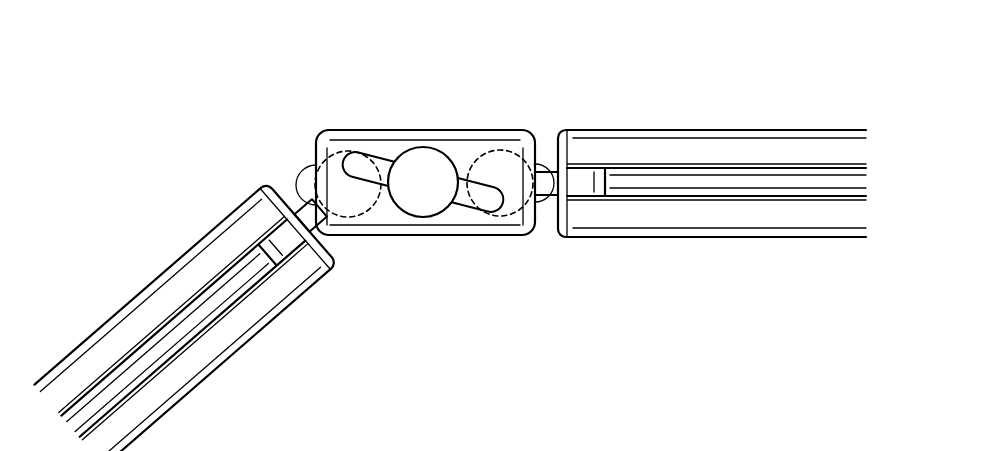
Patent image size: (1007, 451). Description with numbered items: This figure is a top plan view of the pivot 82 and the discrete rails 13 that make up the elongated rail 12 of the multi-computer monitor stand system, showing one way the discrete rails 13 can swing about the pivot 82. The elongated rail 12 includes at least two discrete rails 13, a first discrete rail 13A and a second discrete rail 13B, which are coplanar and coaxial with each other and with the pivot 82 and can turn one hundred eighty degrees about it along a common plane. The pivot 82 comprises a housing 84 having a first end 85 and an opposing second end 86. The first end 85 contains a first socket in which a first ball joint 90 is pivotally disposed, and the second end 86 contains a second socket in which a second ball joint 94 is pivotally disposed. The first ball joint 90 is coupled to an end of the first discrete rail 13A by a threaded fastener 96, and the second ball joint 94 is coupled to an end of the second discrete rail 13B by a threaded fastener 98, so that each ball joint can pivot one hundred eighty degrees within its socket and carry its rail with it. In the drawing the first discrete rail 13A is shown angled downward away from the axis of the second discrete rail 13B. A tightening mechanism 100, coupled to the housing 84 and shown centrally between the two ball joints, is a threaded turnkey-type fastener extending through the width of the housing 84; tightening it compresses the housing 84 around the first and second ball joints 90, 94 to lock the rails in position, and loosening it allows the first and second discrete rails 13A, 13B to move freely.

The elongated rail 12 is at (484, 74).
The pivot 82 is at (428, 112).
The housing 84 is at (448, 130).
The first end 85 is at (316, 153).
The second end 86 is at (538, 148).
The first ball joint 90 is at (336, 148).
The second ball joint 94 is at (503, 150).
The threaded fastener 96 is at (306, 197).
The threaded fastener 98 is at (546, 197).
The tightening mechanism 100 is at (425, 218).
The discrete rails 13 is at (687, 238).
The first discrete rail 13A is at (185, 317).
The second discrete rail 13B is at (712, 229).